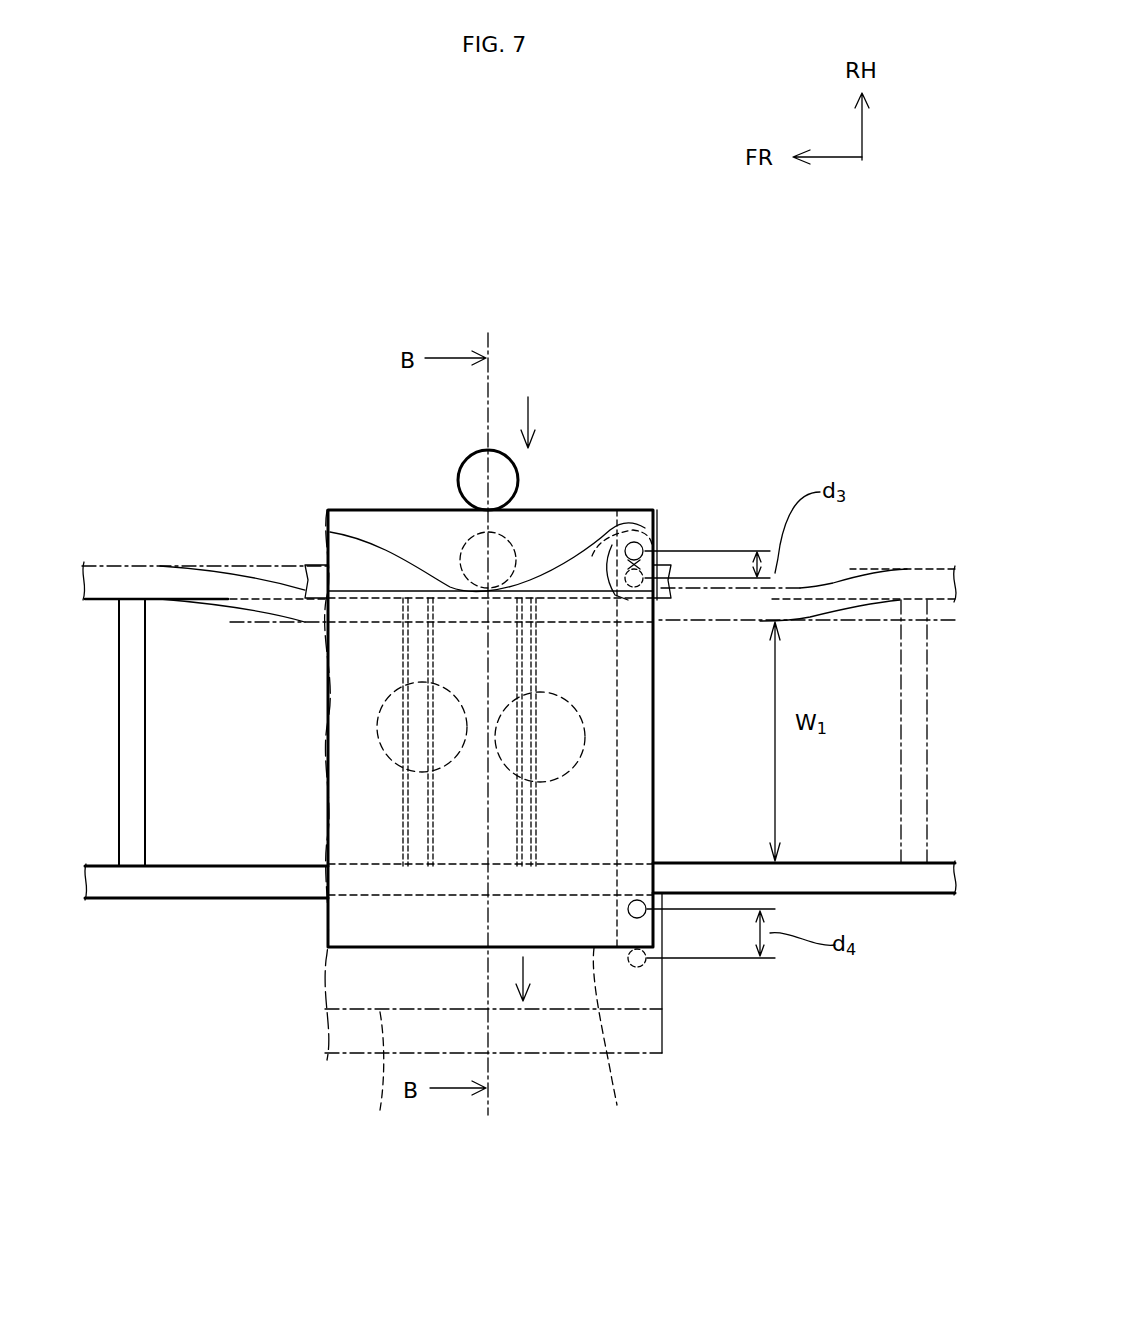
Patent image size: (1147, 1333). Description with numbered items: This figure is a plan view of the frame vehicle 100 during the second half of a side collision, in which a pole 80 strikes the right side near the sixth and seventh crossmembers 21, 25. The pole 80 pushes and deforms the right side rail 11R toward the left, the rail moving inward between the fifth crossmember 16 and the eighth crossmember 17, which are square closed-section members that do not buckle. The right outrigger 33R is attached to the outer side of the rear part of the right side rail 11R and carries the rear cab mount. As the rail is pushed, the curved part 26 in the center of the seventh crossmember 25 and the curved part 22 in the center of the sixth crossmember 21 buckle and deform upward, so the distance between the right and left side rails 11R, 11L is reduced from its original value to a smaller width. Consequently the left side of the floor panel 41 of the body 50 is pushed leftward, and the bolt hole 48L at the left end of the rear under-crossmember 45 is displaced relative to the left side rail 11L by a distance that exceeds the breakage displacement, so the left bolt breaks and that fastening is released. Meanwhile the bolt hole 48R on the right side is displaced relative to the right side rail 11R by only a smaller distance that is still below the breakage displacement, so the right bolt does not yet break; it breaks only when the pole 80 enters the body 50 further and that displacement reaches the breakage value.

The frame vehicle 100 is at (268, 293).
The pole 80 is at (490, 452).
The outrigger 33R is at (600, 540).
The bolt hole 48R is at (664, 535).
The right side rail 11R is at (305, 548).
The floor panel 41 is at (370, 510).
The fifth crossmember 16 is at (118, 712).
The eighth crossmember 17 is at (915, 785).
The left side rail 11L is at (295, 898).
The curved part 22 is at (378, 727).
The sixth crossmember 21 is at (405, 790).
The curved part 26 is at (585, 697).
The seventh crossmember 25 is at (585, 793).
The bolt hole 48L is at (640, 898).
The rear under-crossmember 45 is at (613, 1040).
The body 50 is at (351, 1074).